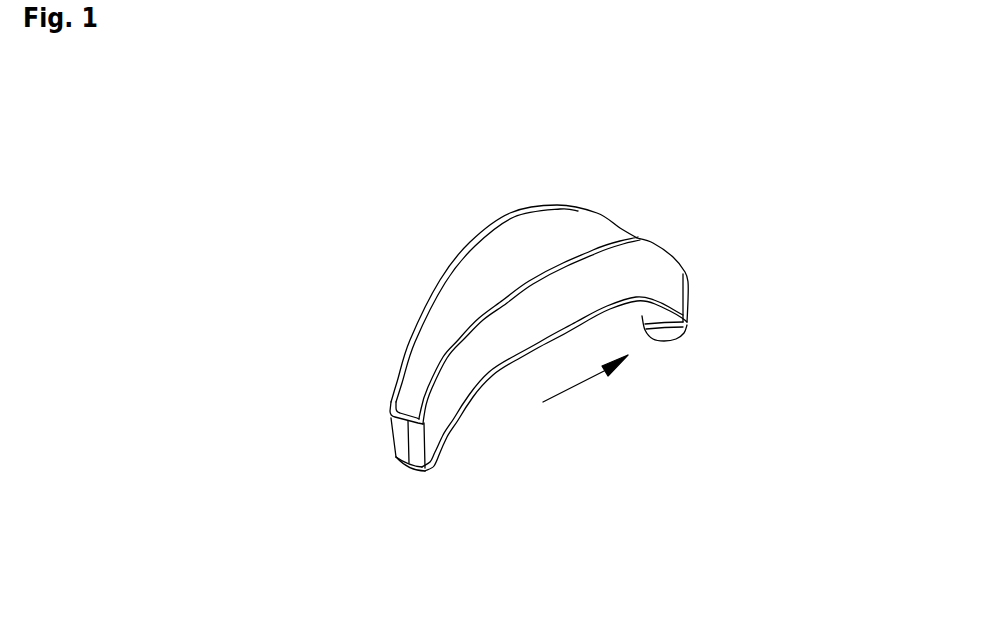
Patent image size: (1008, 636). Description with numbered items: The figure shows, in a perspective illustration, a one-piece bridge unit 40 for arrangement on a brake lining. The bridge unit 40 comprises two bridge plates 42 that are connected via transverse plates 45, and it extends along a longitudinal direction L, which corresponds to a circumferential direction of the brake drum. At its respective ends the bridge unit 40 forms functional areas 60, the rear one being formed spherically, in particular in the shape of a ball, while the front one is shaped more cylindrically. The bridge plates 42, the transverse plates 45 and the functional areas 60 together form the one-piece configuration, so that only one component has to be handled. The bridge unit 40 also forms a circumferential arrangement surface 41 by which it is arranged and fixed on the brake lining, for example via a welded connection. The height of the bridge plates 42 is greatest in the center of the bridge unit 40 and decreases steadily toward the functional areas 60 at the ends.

The bridge unit 40 is at (583, 180).
The arrangement surface 41 is at (392, 416).
The bridge plate 42 is at (442, 290).
The transverse plate 45 is at (400, 447).
The functional area 60 is at (423, 472).
The longitudinal direction L is at (575, 387).